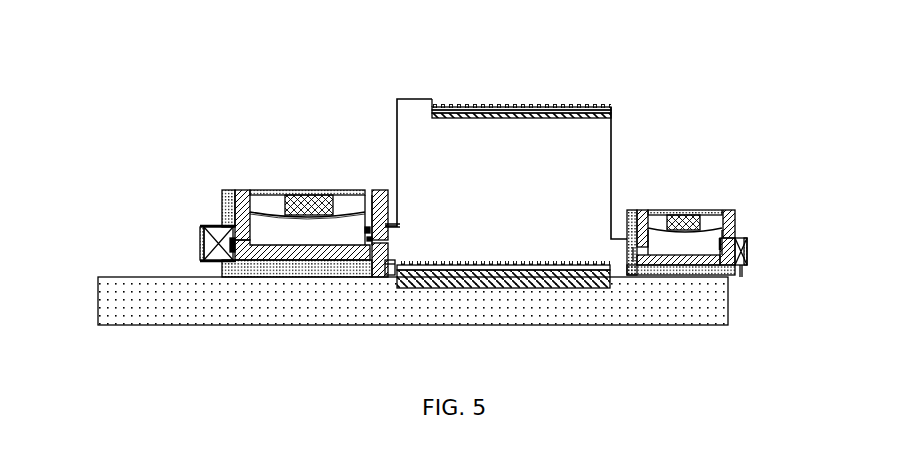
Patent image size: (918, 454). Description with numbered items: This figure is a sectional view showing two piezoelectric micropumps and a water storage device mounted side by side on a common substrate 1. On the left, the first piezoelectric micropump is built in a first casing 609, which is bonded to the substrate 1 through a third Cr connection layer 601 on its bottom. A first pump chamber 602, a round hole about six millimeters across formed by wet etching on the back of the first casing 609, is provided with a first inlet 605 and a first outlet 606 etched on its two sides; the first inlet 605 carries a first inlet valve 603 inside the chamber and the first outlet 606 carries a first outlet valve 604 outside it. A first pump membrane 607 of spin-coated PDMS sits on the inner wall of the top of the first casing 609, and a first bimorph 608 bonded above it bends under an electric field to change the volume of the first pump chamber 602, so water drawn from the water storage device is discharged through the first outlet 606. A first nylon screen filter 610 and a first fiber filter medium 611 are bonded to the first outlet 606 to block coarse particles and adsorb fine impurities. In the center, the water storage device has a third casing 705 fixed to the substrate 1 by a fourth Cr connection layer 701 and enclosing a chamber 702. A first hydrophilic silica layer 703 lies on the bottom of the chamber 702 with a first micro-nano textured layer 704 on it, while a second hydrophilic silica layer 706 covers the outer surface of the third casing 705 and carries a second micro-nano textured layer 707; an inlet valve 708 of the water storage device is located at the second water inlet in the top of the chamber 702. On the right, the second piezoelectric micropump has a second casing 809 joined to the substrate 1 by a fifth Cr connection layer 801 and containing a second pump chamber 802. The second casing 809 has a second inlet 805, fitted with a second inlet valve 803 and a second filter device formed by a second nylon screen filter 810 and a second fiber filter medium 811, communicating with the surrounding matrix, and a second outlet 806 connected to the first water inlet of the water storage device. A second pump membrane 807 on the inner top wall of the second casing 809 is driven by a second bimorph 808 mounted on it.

The substrate 1 is at (165, 302).
The third Cr connection layer 601 is at (242, 268).
The first pump chamber 602 is at (308, 250).
The first inlet valve 603 is at (362, 268).
The first outlet valve 604 is at (205, 256).
The first inlet 605 is at (371, 242).
The first outlet 606 is at (237, 234).
The first pump membrane 607 is at (247, 232).
The first bimorph 608 is at (310, 210).
The first casing 609 is at (374, 220).
The first nylon screen filter 610 is at (203, 241).
The first fiber filter medium 611 is at (203, 254).
The fourth Cr connection layer 701 is at (517, 282).
The chamber 702 is at (610, 123).
The first hydrophilic silica layer 703 is at (465, 265).
The first micro-nano textured layer 704 is at (558, 262).
The third casing 705 is at (574, 117).
The second hydrophilic silica layer 706 is at (530, 112).
The second micro-nano textured layer 707 is at (472, 106).
The inlet valve of the water storage device 708 is at (432, 107).
The fifth Cr connection layer 801 is at (689, 250).
The second pump chamber 802 is at (686, 262).
The second inlet valve 803 is at (719, 268).
The second inlet 805 is at (730, 248).
The second outlet 806 is at (634, 256).
The second pump membrane 807 is at (648, 225).
The second bimorph 808 is at (690, 213).
The second casing 809 is at (724, 213).
The second nylon screen filter 810 is at (743, 250).
The second fiber filter medium 811 is at (740, 267).